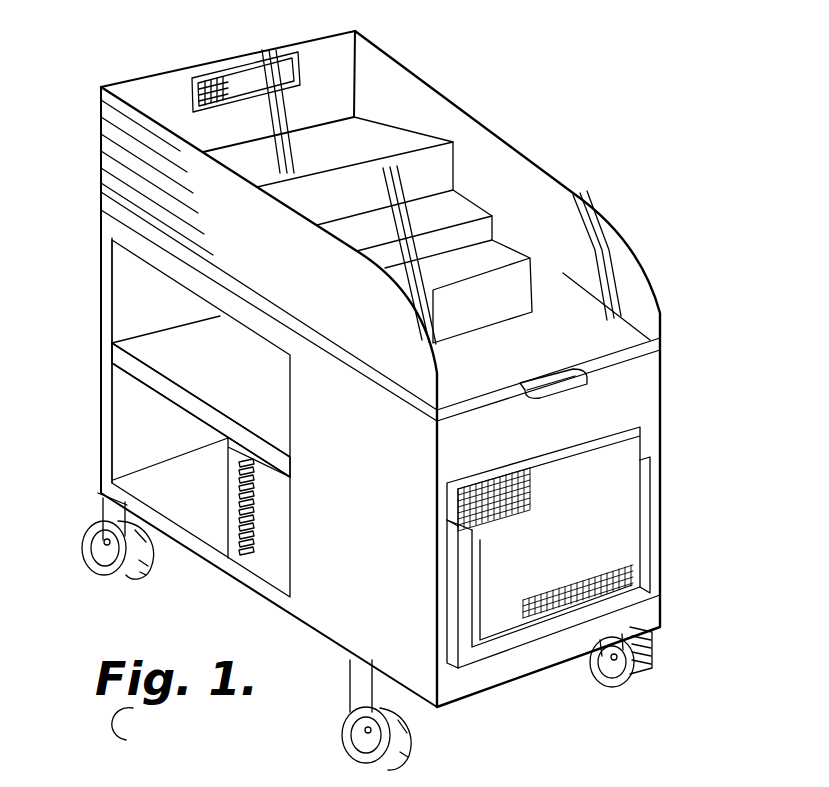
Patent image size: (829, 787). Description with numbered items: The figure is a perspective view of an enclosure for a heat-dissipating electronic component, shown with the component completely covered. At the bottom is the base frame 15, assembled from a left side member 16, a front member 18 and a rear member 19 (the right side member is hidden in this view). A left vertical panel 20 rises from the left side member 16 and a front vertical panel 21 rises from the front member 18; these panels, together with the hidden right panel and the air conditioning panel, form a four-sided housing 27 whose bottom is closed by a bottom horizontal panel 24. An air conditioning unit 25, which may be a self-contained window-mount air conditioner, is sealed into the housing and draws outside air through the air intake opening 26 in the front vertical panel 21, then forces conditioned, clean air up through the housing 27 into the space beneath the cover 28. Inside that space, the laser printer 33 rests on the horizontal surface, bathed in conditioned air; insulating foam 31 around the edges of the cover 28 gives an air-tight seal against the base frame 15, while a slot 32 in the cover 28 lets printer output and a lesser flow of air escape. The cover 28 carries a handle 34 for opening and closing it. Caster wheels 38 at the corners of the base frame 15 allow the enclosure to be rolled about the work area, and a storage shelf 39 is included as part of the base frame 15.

The base frame 15 is at (500, 748).
The left side member 16 is at (190, 542).
The front member 18 is at (525, 670).
The rear member 19 is at (133, 468).
The left vertical panel 20 is at (363, 613).
The front vertical panel 21 is at (640, 414).
The bottom horizontal panel 24 is at (218, 538).
The air conditioning unit 25 is at (262, 557).
The air intake opening 26 is at (625, 569).
The housing 27 is at (698, 493).
The cover 28 is at (100, 146).
The insulating foam 31 is at (116, 216).
The slot 32 is at (240, 82).
The laser printer 33 is at (420, 142).
The handle 34 is at (568, 390).
The caster wheels 38 is at (655, 660).
The storage shelf 39 is at (133, 340).